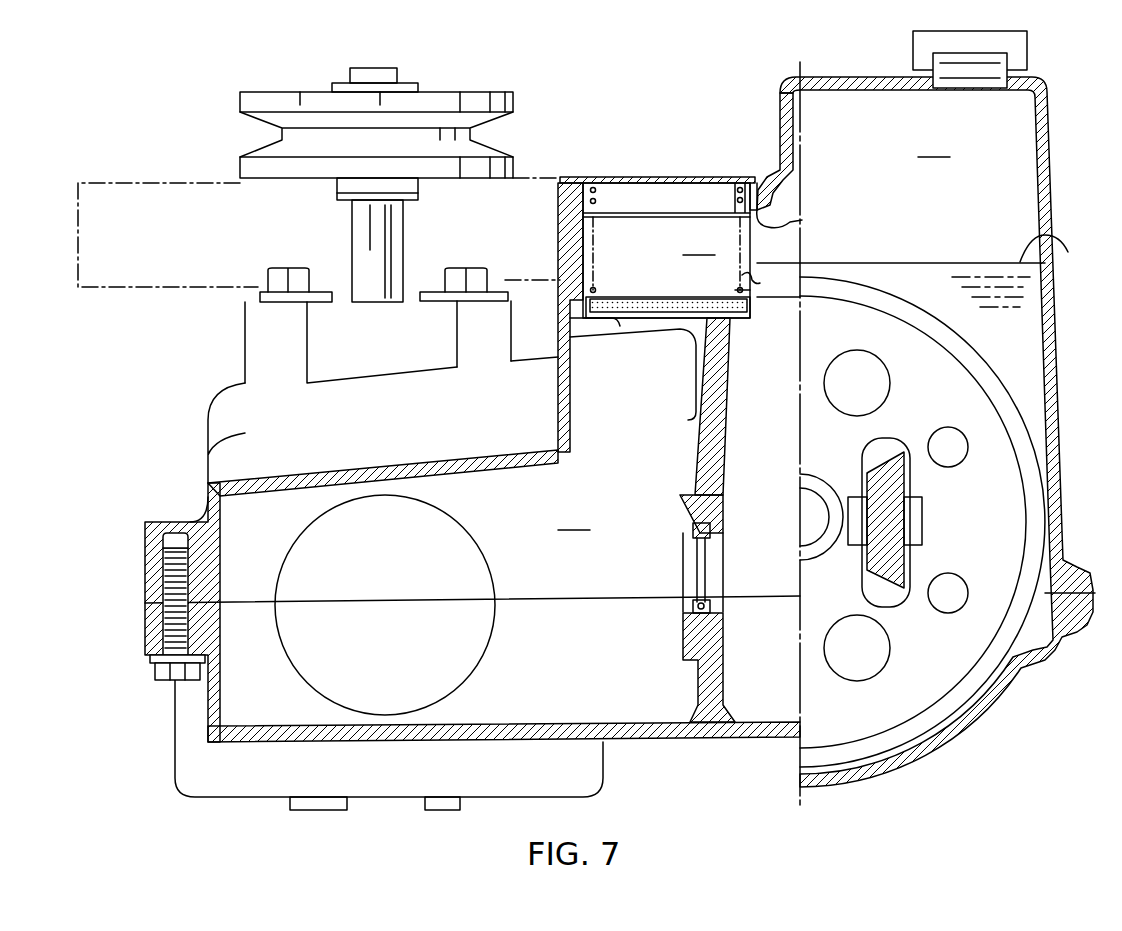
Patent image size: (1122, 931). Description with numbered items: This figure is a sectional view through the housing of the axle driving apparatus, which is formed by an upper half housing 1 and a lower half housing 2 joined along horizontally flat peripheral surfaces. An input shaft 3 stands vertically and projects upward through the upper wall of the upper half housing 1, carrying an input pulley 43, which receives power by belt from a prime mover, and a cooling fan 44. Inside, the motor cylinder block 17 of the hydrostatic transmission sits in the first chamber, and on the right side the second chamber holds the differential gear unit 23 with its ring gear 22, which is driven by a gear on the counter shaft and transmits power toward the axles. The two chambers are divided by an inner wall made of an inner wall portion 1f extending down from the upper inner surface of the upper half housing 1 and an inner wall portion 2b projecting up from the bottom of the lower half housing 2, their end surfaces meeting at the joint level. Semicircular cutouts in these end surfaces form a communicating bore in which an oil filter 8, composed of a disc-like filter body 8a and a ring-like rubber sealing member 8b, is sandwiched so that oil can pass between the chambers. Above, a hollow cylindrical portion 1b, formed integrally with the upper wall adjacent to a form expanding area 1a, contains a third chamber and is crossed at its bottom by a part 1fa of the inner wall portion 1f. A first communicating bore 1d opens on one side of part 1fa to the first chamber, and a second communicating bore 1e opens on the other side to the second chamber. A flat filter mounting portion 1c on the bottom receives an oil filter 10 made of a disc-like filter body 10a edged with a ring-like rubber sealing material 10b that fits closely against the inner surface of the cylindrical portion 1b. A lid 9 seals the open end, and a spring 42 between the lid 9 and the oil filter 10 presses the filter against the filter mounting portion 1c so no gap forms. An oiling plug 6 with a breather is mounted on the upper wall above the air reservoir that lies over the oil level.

The upper half housing 1 is at (145, 530).
The form expanding area 1a is at (1048, 157).
The cylindrical portion 1b is at (757, 178).
The filter mounting portion 1c is at (565, 320).
The first communicating bore 1d is at (613, 343).
The second communicating bore 1e is at (796, 224).
The inner wall portion 1f is at (717, 455).
The part of inner wall portion 1fa is at (695, 332).
The lower half housing 2 is at (150, 658).
The inner wall portion 2b is at (715, 658).
The input shaft 3 is at (352, 238).
The oiling plug 6 is at (913, 52).
The oil filter 8 is at (697, 557).
The filter body 8a is at (697, 590).
The sealing member 8b is at (693, 525).
The lid 9 is at (684, 177).
The oil filter 10 is at (660, 218).
The filter body 10a is at (640, 299).
The sealing material 10b is at (753, 303).
The cylinder block 17 is at (275, 568).
The ring gear 22 is at (1010, 407).
The differential gear unit 23 is at (900, 276).
The spring 42 is at (767, 289).
The input pulley 43 is at (240, 100).
The cooling fan 44 is at (158, 182).